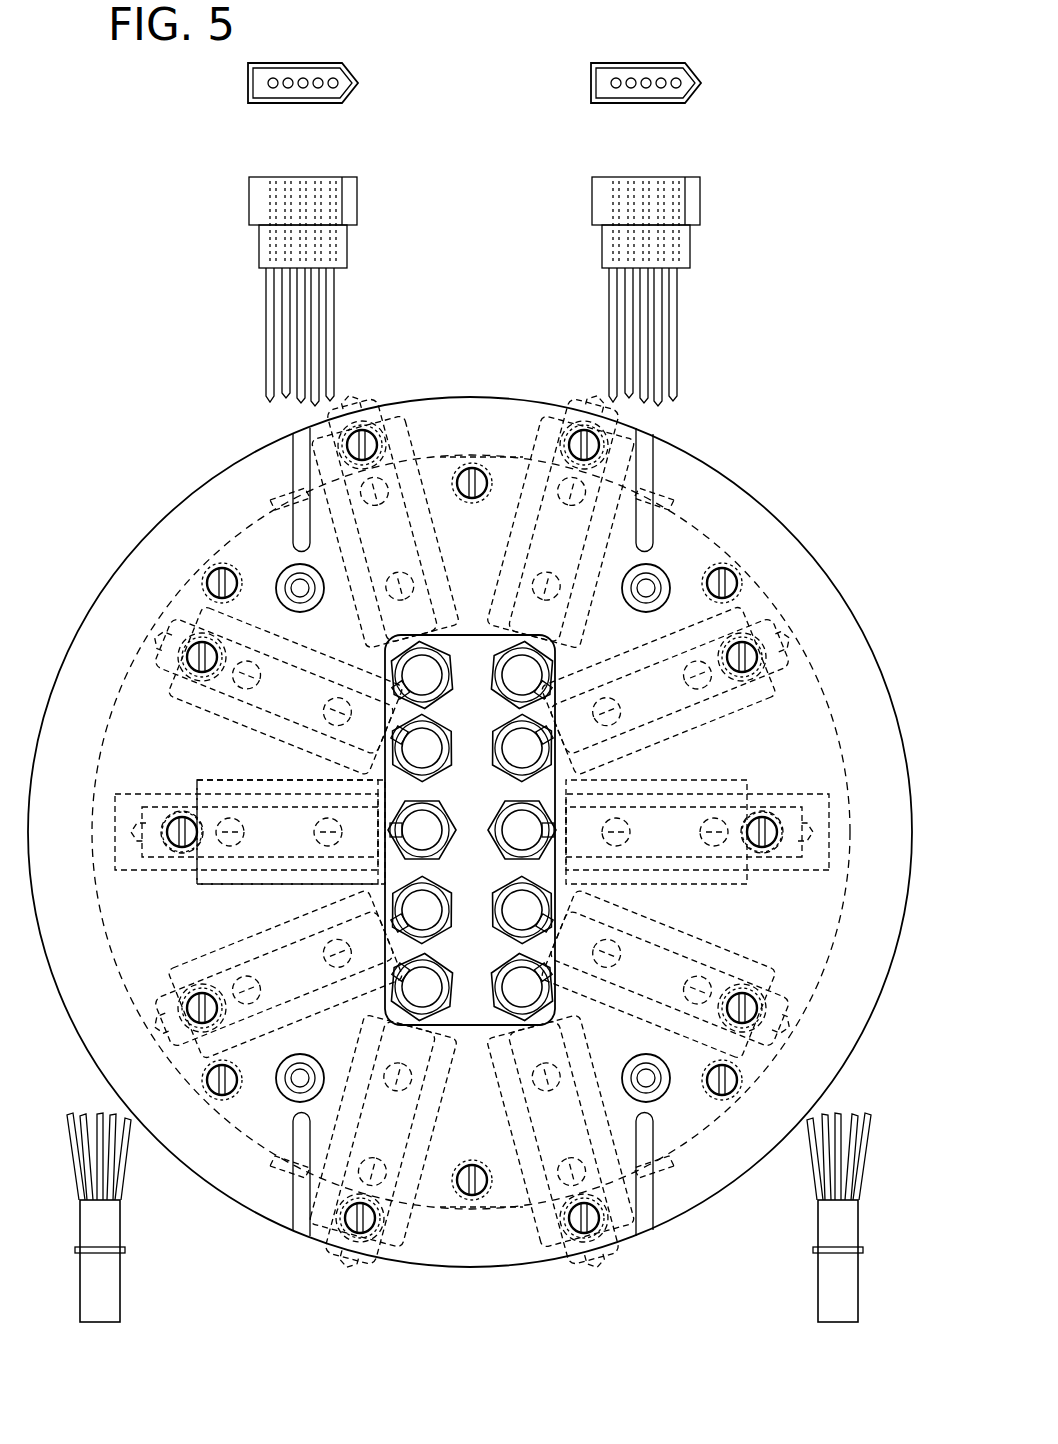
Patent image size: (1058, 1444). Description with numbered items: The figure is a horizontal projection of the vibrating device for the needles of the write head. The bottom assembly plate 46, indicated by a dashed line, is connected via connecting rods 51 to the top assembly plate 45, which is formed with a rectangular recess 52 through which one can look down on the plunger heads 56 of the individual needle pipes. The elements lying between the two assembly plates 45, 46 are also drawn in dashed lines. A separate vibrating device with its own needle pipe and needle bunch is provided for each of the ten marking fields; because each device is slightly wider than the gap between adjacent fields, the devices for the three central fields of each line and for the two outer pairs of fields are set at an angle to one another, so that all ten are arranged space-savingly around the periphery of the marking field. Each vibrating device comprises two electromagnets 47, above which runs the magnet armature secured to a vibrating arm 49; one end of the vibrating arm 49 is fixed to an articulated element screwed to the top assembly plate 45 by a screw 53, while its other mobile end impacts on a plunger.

The top assembly plate 45 is at (410, 1245).
The bottom assembly plate 46 is at (450, 1194).
The electromagnets 47 is at (305, 797).
The vibrating arm 49 is at (267, 837).
The connecting rods 51 is at (280, 578).
The rectangular recess 52 is at (468, 1028).
The screw 53 is at (580, 445).
The plunger heads 56 is at (528, 832).